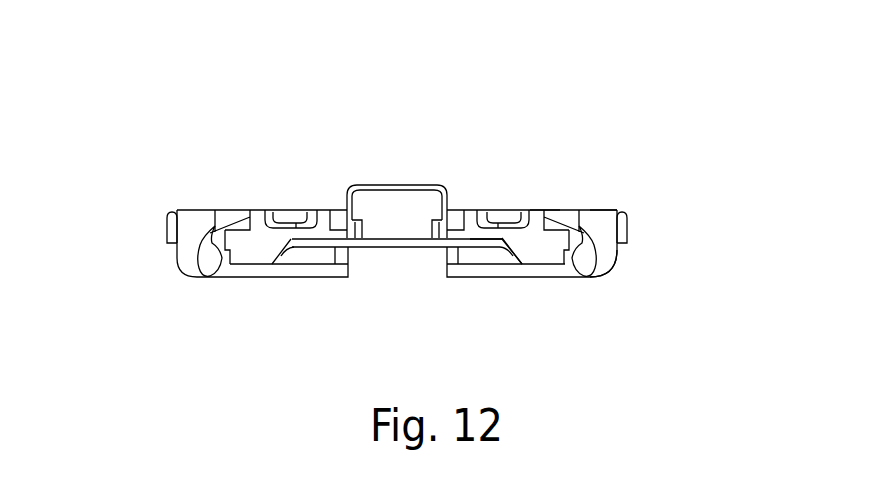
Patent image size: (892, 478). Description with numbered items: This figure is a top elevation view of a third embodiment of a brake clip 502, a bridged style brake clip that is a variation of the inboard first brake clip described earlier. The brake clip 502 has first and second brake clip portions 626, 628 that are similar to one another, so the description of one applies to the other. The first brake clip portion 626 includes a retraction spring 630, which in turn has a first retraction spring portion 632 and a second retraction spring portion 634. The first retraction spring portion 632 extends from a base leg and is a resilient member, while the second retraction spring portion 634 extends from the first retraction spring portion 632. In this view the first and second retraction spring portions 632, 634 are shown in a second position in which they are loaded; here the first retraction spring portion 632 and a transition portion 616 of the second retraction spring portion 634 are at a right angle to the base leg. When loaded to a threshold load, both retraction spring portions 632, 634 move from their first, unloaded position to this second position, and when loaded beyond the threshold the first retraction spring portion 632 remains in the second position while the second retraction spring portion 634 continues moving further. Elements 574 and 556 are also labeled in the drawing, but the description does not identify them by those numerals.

The brake clip 502 is at (402, 142).
The rail 556 is at (532, 248).
The latch bracket 574 is at (500, 226).
The transition portion 616 is at (628, 233).
The first brake clip portion 626 is at (547, 168).
The second brake clip portion 628 is at (190, 172).
The retraction spring 630 is at (657, 292).
The first retraction spring portion 632 is at (620, 168).
The second retraction spring portion 634 is at (578, 305).